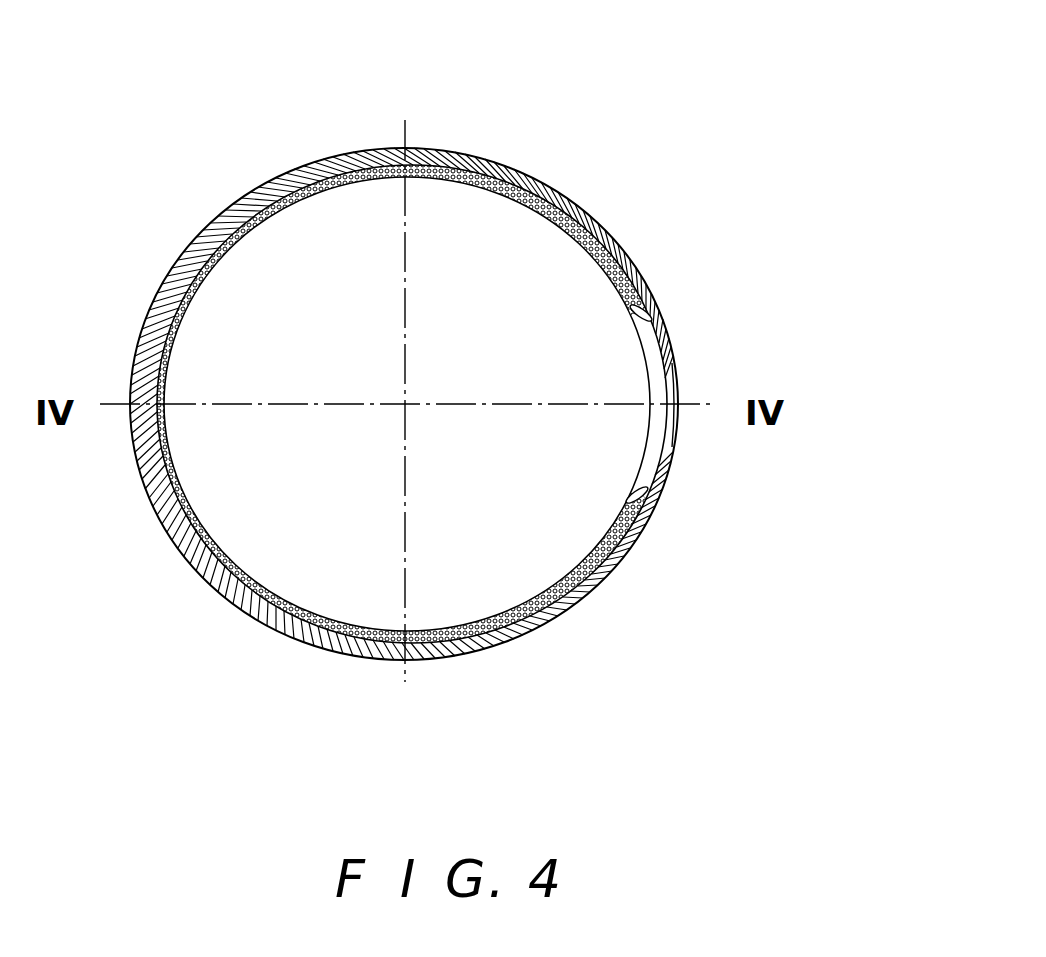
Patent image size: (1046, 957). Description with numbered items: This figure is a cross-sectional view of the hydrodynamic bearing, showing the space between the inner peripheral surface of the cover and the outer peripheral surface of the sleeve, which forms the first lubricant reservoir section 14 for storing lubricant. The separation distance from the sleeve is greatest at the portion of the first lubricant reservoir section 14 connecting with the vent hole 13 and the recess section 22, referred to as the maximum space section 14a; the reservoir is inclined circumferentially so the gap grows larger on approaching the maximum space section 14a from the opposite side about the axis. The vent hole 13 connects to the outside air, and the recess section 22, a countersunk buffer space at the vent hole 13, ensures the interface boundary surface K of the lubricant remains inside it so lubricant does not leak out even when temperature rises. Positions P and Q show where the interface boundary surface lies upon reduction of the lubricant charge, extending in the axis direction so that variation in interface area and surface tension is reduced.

The first lubricant reservoir section 14 is at (440, 177).
The maximum space section 14a is at (653, 353).
The recess section 22 is at (680, 378).
The vent hole 13 is at (680, 414).
The interface boundary surface K is at (660, 333).
The position of the interface boundary surface P is at (642, 295).
The position of the interface boundary surface Q is at (600, 248).